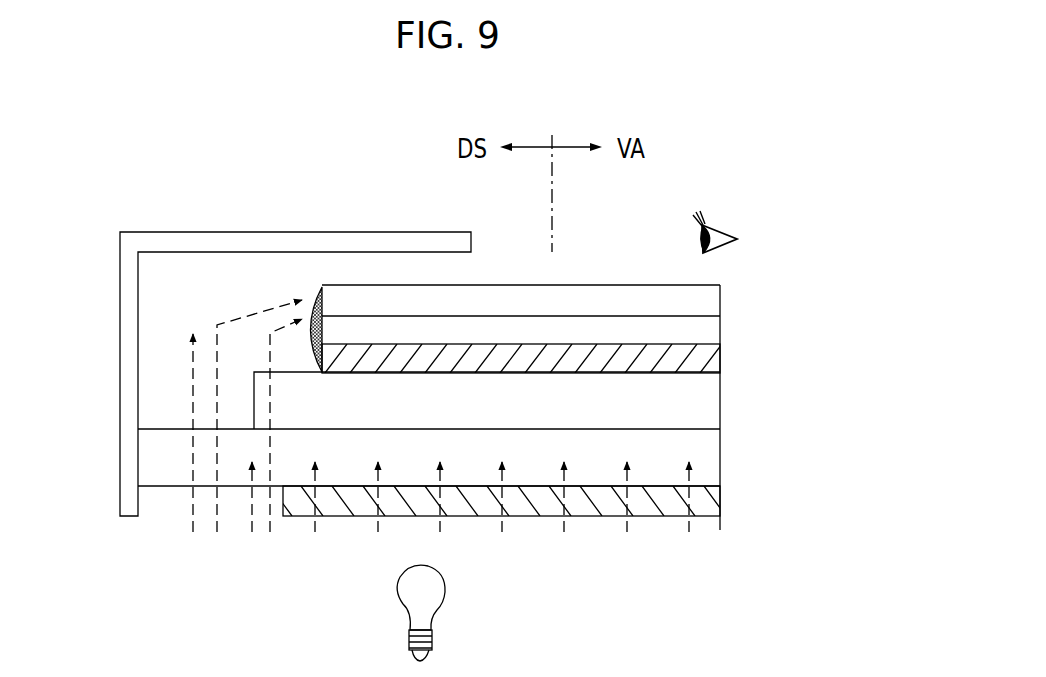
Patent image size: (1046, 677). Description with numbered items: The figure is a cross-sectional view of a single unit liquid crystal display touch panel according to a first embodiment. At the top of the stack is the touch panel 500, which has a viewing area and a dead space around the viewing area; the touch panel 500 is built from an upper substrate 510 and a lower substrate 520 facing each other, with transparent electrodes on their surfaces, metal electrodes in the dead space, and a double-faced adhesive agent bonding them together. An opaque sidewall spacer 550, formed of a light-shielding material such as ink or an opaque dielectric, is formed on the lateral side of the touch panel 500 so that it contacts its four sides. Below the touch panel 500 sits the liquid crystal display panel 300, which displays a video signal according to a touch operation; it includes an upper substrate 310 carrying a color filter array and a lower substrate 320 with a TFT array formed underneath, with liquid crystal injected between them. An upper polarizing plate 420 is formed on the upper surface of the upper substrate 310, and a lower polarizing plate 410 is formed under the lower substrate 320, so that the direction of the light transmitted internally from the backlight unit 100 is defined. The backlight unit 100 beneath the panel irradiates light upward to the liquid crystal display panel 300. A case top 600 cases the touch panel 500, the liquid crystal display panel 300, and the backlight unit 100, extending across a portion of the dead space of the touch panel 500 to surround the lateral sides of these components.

The backlight unit 100 is at (435, 593).
The liquid crystal display panel 300 is at (505, 429).
The upper substrate 310 is at (712, 403).
The lower substrate 320 is at (712, 461).
The lower polarizing plate 410 is at (712, 505).
The upper polarizing plate 420 is at (712, 362).
The touch panel 500 is at (597, 316).
The upper substrate 510 is at (712, 304).
The lower substrate 520 is at (712, 333).
The opaque sidewall spacer 550 is at (321, 286).
The case top 600 is at (124, 398).